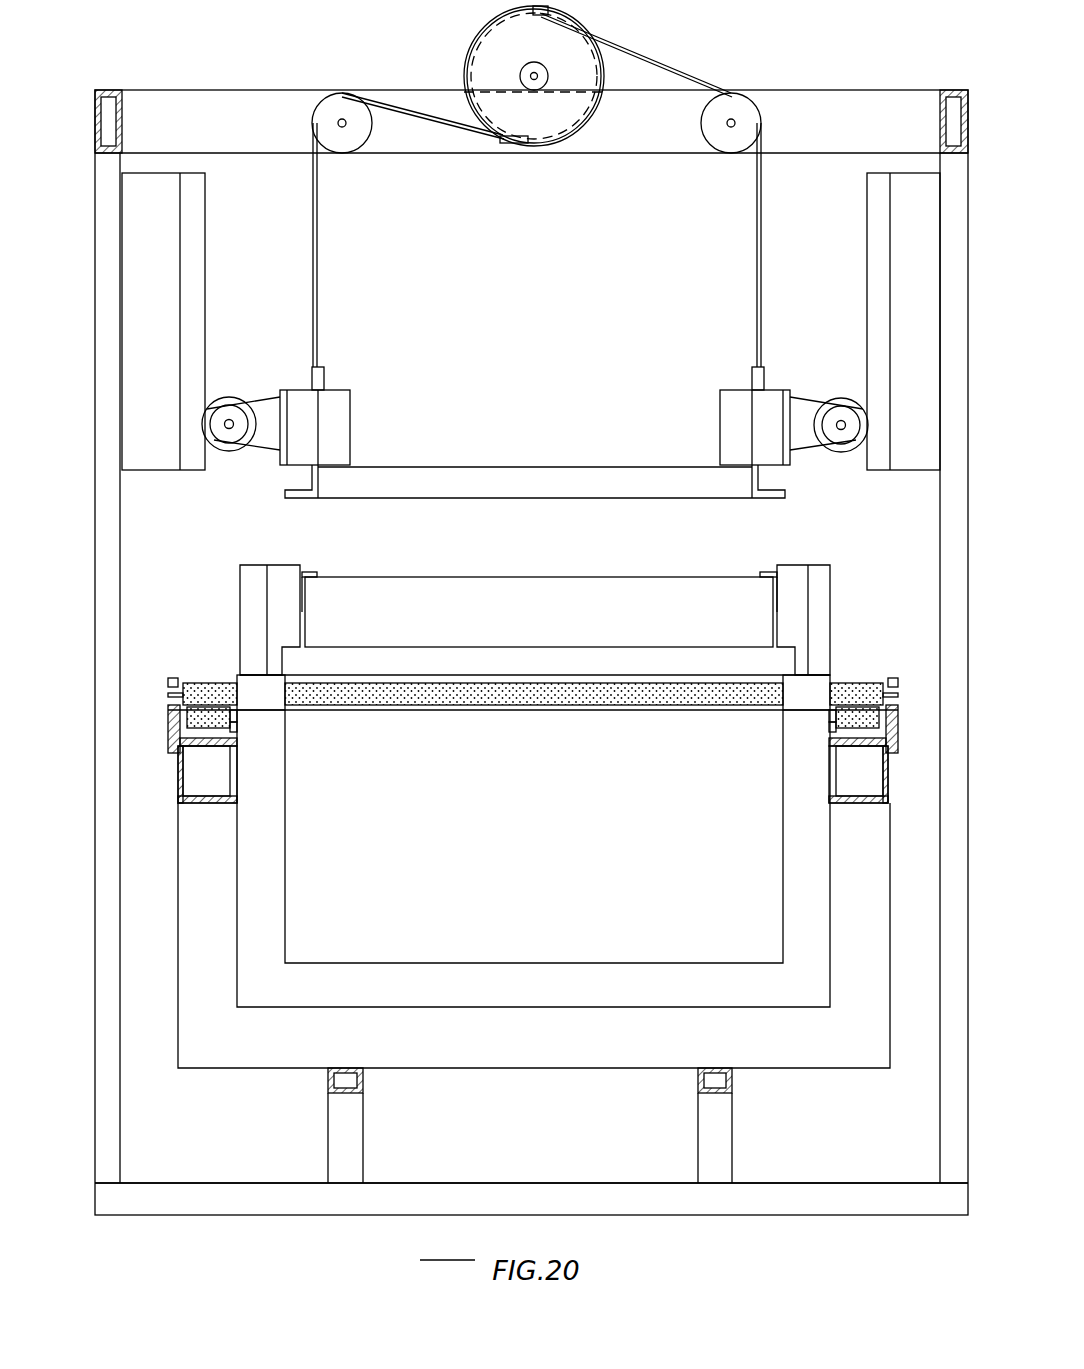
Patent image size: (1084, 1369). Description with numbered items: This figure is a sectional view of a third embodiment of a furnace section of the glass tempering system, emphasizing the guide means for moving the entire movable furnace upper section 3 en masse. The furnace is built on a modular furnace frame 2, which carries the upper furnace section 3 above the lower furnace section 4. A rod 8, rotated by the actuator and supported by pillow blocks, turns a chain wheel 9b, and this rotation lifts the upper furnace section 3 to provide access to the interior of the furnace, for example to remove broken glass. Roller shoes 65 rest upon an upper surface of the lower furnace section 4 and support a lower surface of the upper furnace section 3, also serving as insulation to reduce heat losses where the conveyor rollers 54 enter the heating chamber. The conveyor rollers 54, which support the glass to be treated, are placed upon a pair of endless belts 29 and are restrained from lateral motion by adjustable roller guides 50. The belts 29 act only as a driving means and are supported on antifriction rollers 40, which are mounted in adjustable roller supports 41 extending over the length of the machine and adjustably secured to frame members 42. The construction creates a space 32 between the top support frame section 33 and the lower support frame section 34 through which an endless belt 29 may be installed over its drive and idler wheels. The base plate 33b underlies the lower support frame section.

The modular furnace frame 2 is at (797, 88).
The upper furnace section 3 is at (628, 432).
The lower furnace section 4 is at (290, 1073).
The rod 8 is at (538, 76).
The chain wheel 9b is at (570, 37).
The endless belt 29 is at (205, 705).
The roller shoe 65 is at (248, 693).
The antifriction roller 40 is at (238, 723).
The adjustable roller support 41 is at (238, 732).
The frame member 42 is at (223, 785).
The space 32 is at (155, 885).
The lower support frame section 34 is at (205, 928).
The top support frame section 33 is at (110, 1030).
The adjustable roller guide 50 is at (898, 682).
The conveyor roller 54 is at (868, 695).
The base plate 33b is at (305, 1200).